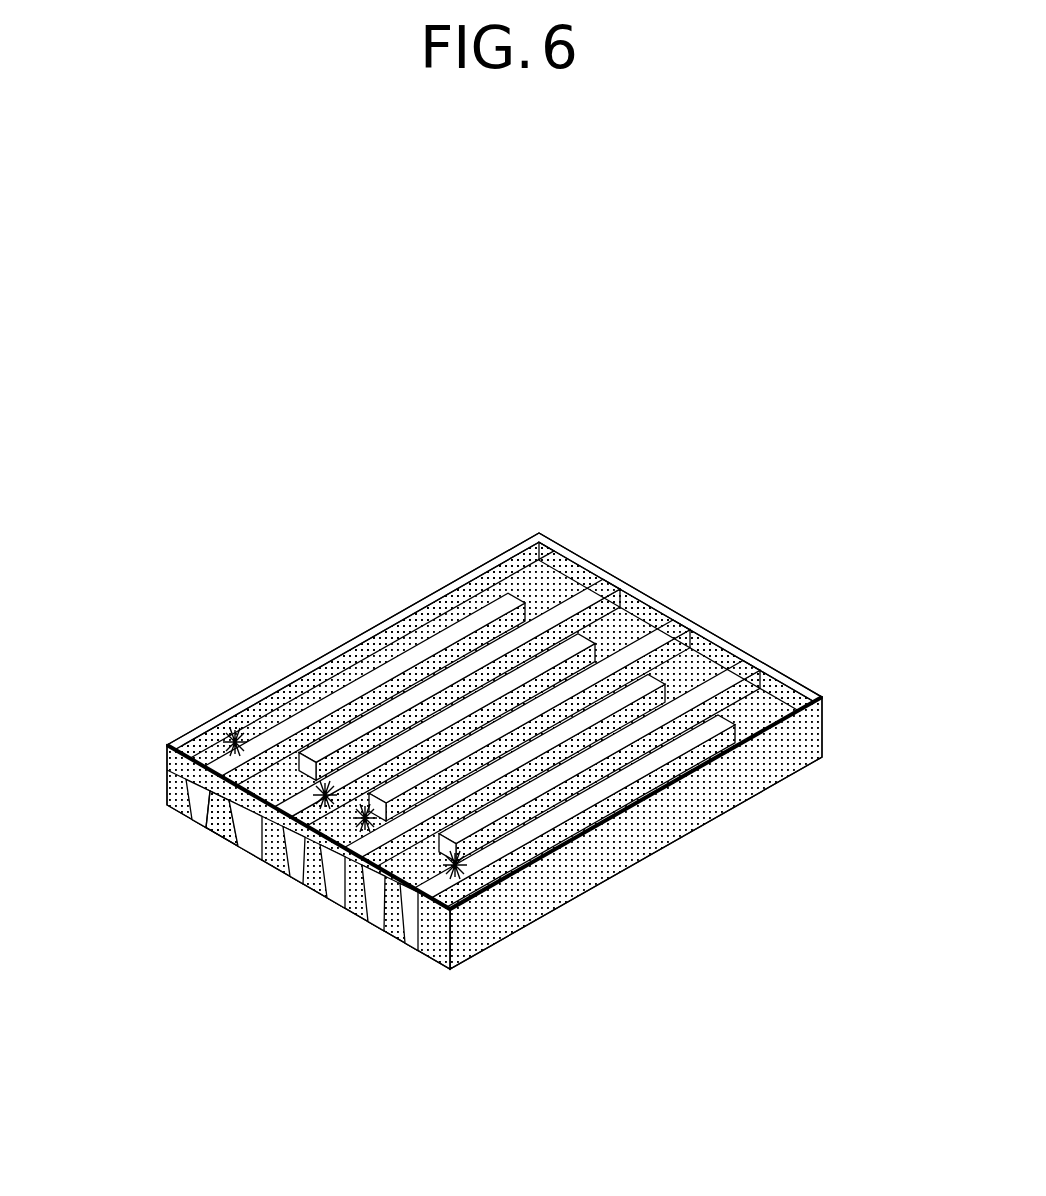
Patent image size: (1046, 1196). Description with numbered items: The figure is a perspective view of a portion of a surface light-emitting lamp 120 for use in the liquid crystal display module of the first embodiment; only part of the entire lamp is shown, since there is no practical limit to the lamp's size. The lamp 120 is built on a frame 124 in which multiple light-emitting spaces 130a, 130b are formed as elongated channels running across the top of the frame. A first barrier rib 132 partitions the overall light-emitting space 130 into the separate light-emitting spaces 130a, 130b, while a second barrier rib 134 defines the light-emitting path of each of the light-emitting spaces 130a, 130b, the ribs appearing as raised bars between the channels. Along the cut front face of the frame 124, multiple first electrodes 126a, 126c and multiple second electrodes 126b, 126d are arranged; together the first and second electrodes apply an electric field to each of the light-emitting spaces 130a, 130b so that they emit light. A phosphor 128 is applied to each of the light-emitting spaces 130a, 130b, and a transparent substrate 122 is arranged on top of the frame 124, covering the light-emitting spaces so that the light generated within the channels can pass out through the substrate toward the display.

The surface light-emitting lamp 120 is at (356, 585).
The transparent substrate 122 is at (828, 696).
The frame 124 is at (742, 795).
The first electrode 126a is at (165, 800).
The second electrode 126b is at (262, 835).
The first electrode 126c is at (300, 860).
The second electrode 126d is at (390, 905).
The phosphor 128 is at (218, 832).
The light-emitting space 130 is at (748, 507).
The light-emitting space 130a is at (545, 597).
The light-emitting space 130b is at (680, 660).
The first barrier rib 132 is at (640, 655).
The second barrier rib 134 is at (500, 610).